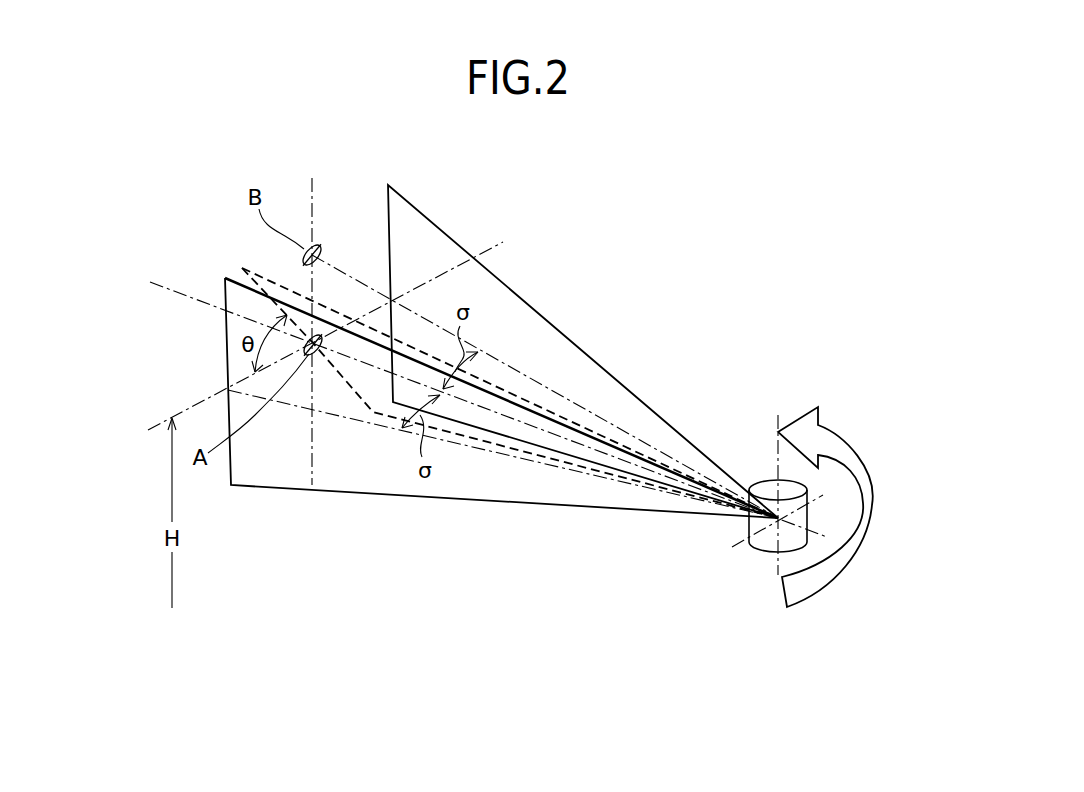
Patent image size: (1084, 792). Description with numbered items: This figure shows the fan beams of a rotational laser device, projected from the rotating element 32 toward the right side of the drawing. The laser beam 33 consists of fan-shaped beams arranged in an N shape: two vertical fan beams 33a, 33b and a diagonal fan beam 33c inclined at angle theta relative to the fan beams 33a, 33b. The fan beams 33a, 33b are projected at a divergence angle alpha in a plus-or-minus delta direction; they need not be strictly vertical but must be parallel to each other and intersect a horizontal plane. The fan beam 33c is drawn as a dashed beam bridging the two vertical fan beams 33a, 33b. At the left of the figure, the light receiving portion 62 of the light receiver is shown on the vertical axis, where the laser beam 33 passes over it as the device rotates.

The rotating light source 32 is at (768, 478).
The laser beam 33 is at (501, 358).
The vertical fan beam 33a is at (357, 494).
The vertical fan beam 33b is at (438, 243).
The inclined fan beam 33c is at (266, 274).
The light receiving portion 62 is at (320, 334).